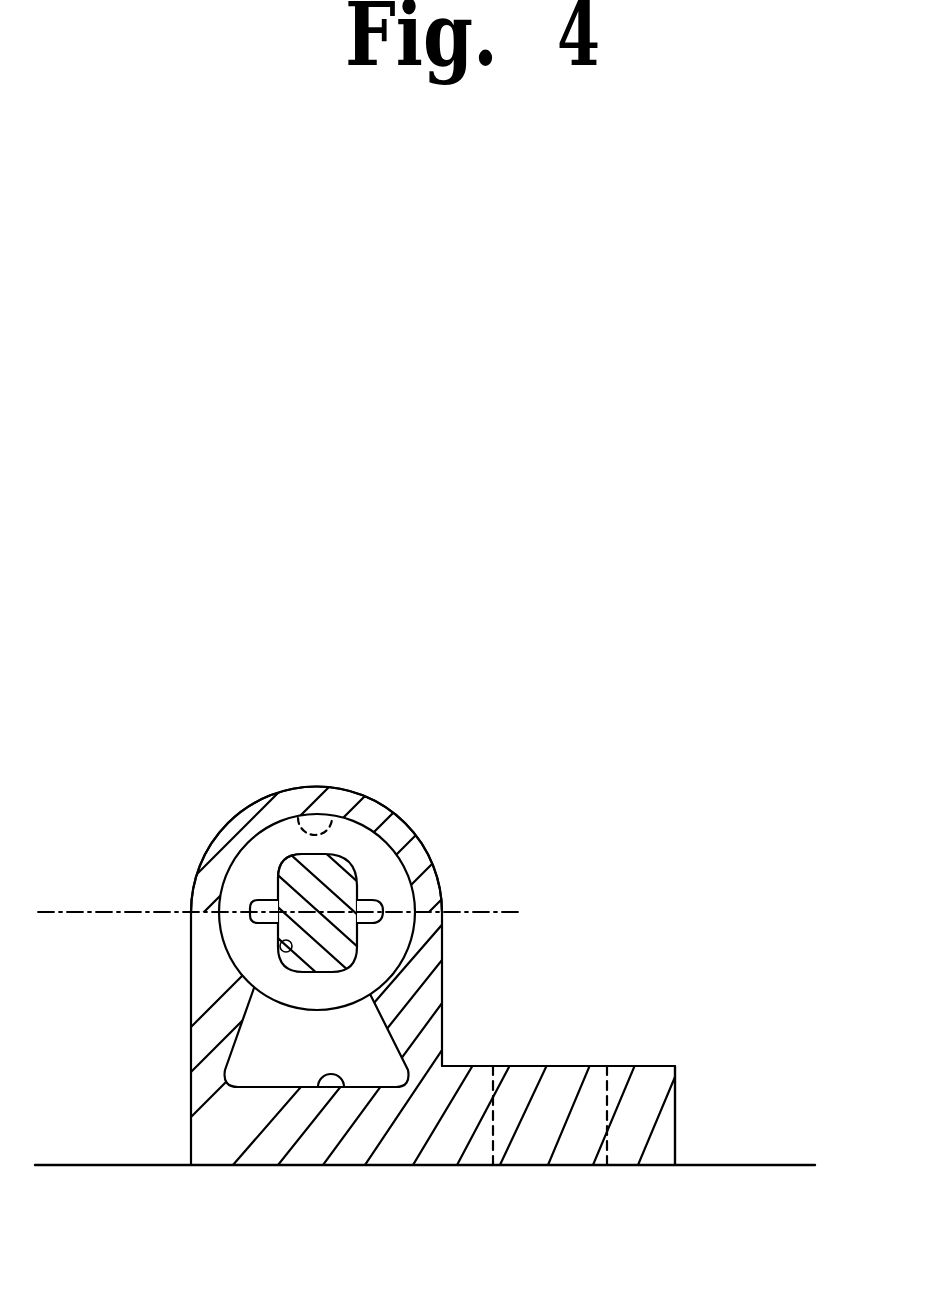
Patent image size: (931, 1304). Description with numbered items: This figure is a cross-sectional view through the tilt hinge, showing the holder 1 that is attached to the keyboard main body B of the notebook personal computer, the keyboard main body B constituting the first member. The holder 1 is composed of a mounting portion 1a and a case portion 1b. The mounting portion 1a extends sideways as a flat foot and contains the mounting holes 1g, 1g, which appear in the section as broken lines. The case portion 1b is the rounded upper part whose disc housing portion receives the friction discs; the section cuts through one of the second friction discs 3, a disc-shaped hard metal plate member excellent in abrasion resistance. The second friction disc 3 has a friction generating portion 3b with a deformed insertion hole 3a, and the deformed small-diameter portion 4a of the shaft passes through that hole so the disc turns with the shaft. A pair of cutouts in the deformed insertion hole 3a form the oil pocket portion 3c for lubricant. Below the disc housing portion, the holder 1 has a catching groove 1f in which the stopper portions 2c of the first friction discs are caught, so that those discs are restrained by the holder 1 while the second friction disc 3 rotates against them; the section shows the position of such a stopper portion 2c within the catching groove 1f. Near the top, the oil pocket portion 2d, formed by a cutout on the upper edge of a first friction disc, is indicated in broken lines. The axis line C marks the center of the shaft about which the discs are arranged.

The holder 1 is at (449, 844).
The mounting portion 1a is at (640, 1066).
The case portion 1b is at (378, 799).
The catching groove 1f is at (333, 1076).
The mounting holes 1g is at (607, 1105).
The stopper portion 2c is at (291, 1052).
The oil pocket portion 2d is at (317, 812).
The second friction disc 3 is at (373, 941).
The deformed insertion hole 3a is at (280, 951).
The friction generating portion 3b is at (238, 844).
The oil pocket portion 3c is at (380, 898).
The deformed small-diameter portion 4a is at (291, 853).
The axis C is at (72, 912).
The keyboard main body B is at (125, 1166).